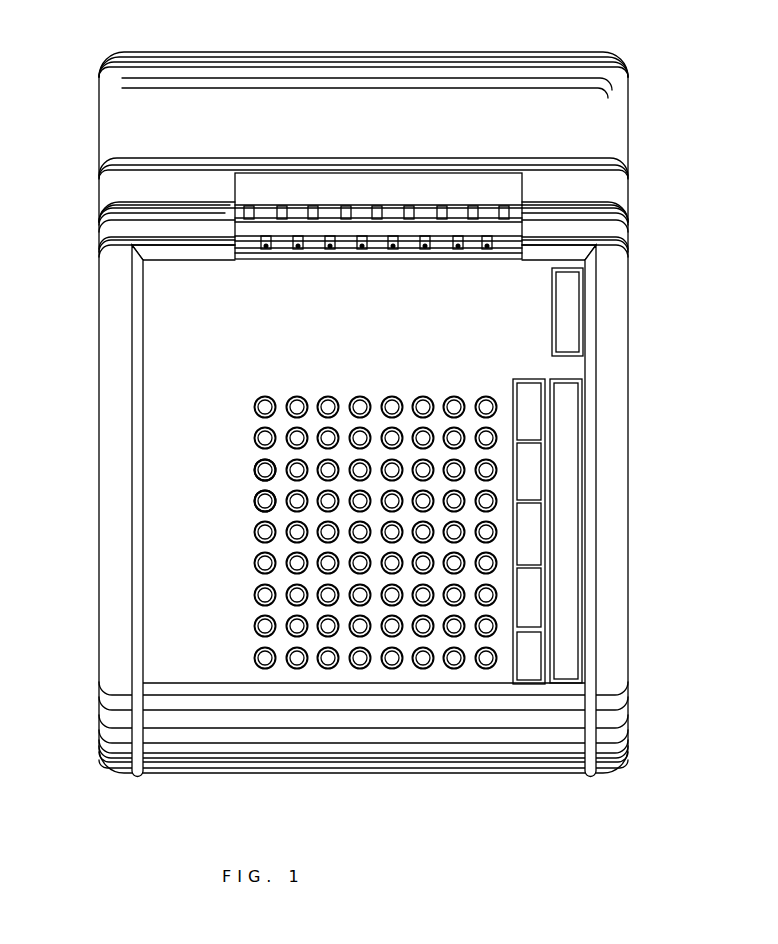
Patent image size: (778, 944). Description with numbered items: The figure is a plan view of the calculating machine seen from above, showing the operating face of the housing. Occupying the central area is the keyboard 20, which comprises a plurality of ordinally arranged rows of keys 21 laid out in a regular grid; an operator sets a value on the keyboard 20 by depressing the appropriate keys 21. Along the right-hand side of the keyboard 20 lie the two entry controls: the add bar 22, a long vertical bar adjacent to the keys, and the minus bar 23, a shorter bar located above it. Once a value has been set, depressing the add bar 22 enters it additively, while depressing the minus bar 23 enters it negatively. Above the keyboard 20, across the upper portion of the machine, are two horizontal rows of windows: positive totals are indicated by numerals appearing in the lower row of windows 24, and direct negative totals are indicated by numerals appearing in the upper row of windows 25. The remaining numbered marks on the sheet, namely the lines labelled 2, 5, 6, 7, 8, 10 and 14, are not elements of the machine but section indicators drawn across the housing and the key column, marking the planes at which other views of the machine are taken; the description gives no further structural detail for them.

The section line 2- 2 is at (348, 90).
The section line 5- 5 is at (565, 273).
The section line 6- 6 is at (615, 10).
The section line 7- 7 is at (534, 70).
The section line 8- 8 is at (122, 103).
The section line 10- 10 is at (152, 75).
The function key column 14 is at (525, 500).
The keyboard 20 is at (252, 527).
The keys 21 is at (262, 472).
The add bar 22 is at (568, 510).
The minus bar 23 is at (570, 312).
The lower row of windows 24 is at (362, 250).
The upper row of windows 25 is at (377, 208).